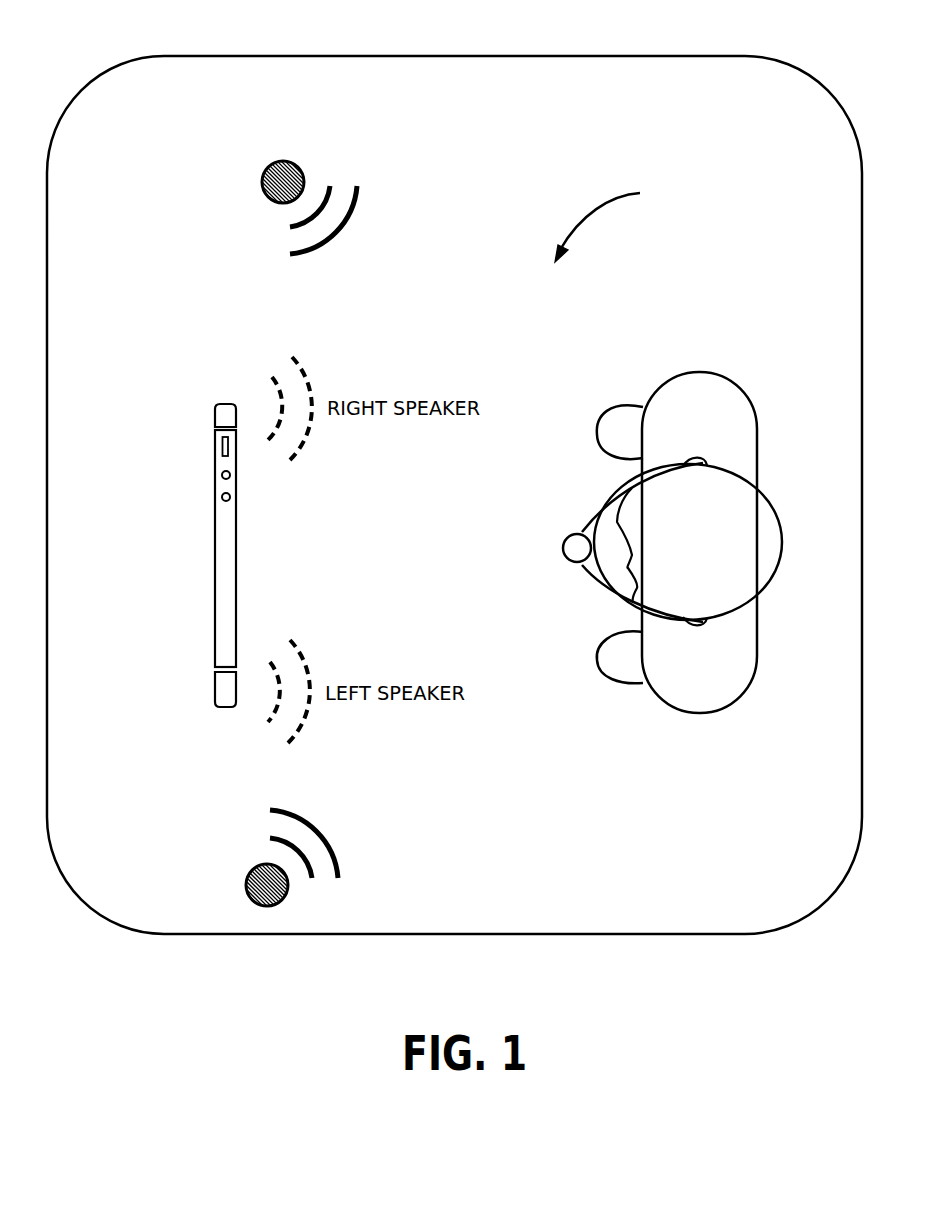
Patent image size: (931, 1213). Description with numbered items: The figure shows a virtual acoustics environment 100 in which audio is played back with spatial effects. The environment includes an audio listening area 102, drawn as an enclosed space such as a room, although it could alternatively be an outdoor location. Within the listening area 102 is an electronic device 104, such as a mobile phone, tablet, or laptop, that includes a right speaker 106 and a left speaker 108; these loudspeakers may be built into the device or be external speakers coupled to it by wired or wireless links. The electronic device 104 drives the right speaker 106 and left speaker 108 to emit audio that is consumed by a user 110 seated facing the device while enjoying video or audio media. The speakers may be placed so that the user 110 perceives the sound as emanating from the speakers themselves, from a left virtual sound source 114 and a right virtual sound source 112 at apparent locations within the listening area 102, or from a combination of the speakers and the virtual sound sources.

The virtual acoustics environment 100 is at (818, 83).
The audio listening area 102 is at (618, 220).
The electronic device 104 is at (149, 557).
The right speaker 106 is at (224, 408).
The left speaker 108 is at (225, 699).
The user 110 is at (768, 483).
The right virtual sound source 112 is at (299, 167).
The left virtual sound source 114 is at (286, 898).